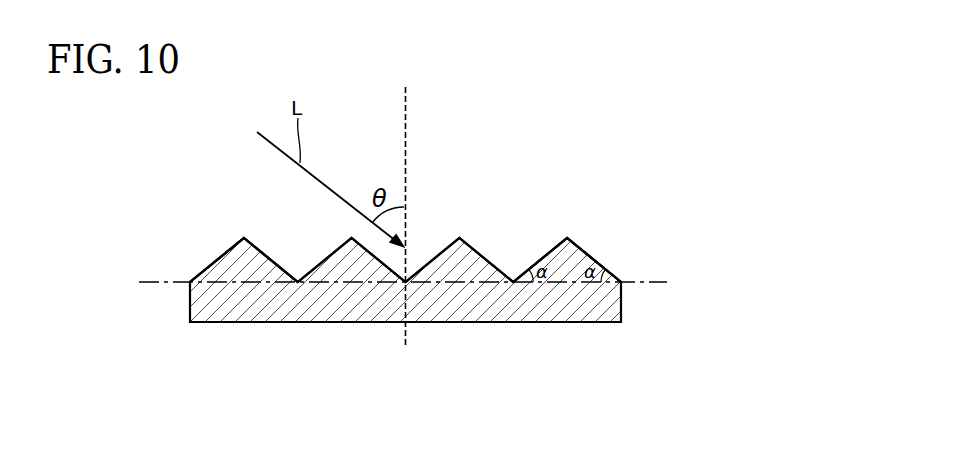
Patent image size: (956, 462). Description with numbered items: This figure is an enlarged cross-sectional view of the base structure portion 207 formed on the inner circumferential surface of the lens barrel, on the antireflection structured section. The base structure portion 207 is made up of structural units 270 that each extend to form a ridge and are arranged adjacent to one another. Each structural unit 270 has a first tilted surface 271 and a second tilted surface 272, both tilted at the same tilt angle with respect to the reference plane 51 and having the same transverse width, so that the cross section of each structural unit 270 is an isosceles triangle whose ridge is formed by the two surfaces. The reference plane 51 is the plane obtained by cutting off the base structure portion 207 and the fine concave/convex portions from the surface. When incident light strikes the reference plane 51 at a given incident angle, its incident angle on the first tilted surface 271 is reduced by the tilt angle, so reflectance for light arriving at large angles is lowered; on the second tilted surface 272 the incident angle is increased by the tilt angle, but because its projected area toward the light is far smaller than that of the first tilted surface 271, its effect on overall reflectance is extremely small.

The base structure portion 207 is at (609, 273).
The structural unit 270 is at (237, 246).
The first tilted surface 271 is at (214, 262).
The second tilted surface 272 is at (267, 258).
The reference plane 51 is at (662, 281).